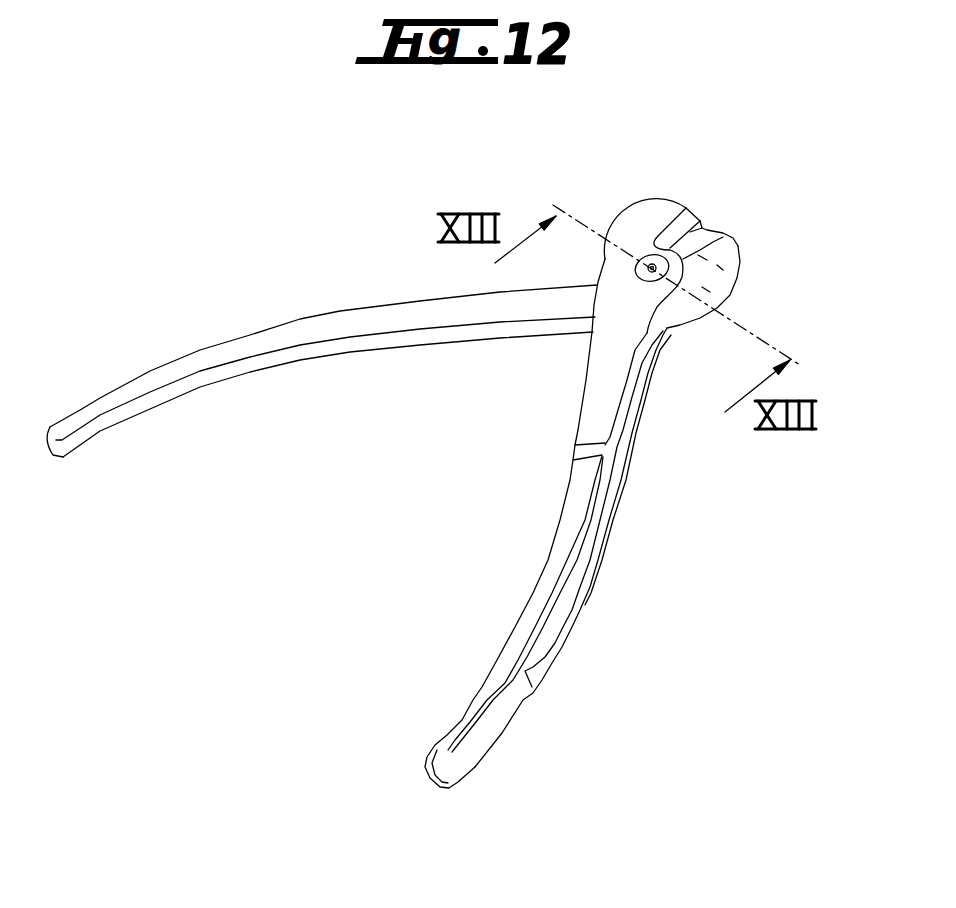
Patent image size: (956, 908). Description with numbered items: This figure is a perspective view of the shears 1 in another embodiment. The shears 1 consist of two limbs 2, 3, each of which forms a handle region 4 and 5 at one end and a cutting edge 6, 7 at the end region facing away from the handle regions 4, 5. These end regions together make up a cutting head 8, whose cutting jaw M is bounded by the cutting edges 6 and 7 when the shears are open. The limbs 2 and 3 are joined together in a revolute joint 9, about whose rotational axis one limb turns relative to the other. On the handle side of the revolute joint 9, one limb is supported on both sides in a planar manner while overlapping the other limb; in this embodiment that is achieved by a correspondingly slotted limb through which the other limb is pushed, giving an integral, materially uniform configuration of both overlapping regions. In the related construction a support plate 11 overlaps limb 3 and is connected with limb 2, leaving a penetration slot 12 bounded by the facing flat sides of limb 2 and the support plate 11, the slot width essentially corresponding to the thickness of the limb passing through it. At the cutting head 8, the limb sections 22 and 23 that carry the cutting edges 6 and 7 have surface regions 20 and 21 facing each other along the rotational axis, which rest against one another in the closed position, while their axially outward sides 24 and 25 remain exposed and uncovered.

The shears 1 is at (487, 187).
The limb 2 is at (614, 577).
The limb 3 is at (218, 332).
The handle region 4 is at (356, 322).
The handle region 5 is at (570, 522).
The cutting edge 6 is at (726, 243).
The cutting edge 7 is at (670, 232).
The cutting head 8 is at (746, 198).
The revolute joint 9 is at (635, 240).
The support plate 11 is at (623, 268).
The penetration slot 12 is at (653, 340).
The surface region 20 is at (685, 209).
The surface region 21 is at (734, 233).
The limb section 22 is at (635, 255).
The limb section 23 is at (710, 287).
The side 24 is at (670, 208).
The side 25 is at (723, 254).
The cutting jaw M is at (700, 229).